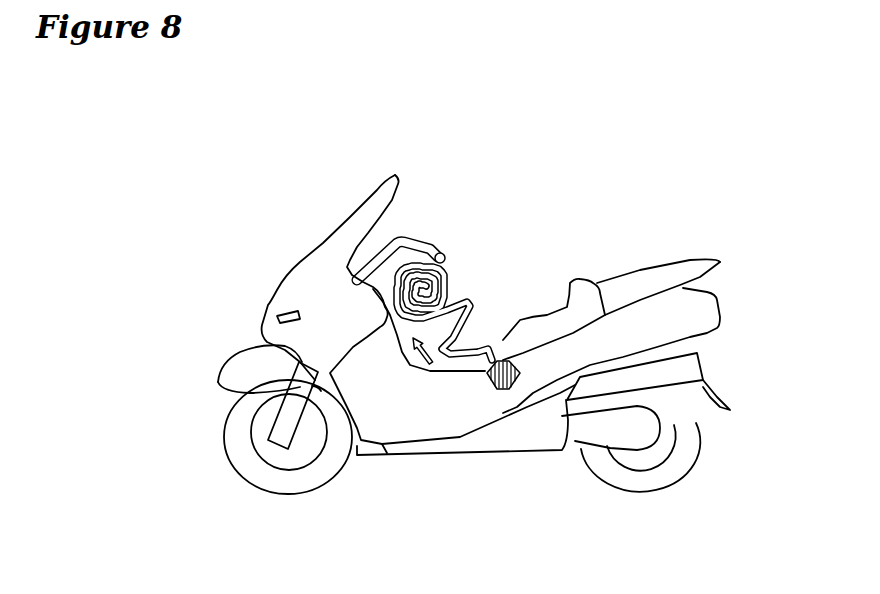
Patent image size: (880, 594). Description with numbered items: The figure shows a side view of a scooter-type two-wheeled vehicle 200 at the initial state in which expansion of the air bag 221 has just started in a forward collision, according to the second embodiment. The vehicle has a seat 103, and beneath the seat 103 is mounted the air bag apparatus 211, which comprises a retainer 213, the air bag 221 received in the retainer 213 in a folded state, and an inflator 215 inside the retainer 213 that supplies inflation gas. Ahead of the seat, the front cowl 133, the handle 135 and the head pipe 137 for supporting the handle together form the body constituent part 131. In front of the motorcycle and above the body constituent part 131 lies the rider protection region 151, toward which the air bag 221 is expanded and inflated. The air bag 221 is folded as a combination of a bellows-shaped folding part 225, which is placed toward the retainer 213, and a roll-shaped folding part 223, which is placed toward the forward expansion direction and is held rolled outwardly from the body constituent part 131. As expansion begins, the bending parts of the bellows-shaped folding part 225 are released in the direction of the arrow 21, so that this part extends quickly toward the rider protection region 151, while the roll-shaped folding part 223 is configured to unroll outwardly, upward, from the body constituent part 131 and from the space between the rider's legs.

The two-wheeled vehicle 200 is at (633, 181).
The seat 103 is at (583, 305).
The body constituent part 131 is at (368, 360).
The front cowl 133 is at (322, 253).
The handle 135 is at (414, 238).
The head pipe for supporting a handle 137 is at (282, 427).
The rider protection region 151 is at (447, 158).
The arrow 21 is at (429, 365).
The air bag apparatus 211 is at (523, 388).
The retainer 213 is at (503, 389).
The inflator 215 is at (498, 386).
The air bag 221 is at (491, 249).
The roll-shaped folding part 223 is at (450, 271).
The bellows-shaped folding part 225 is at (493, 307).